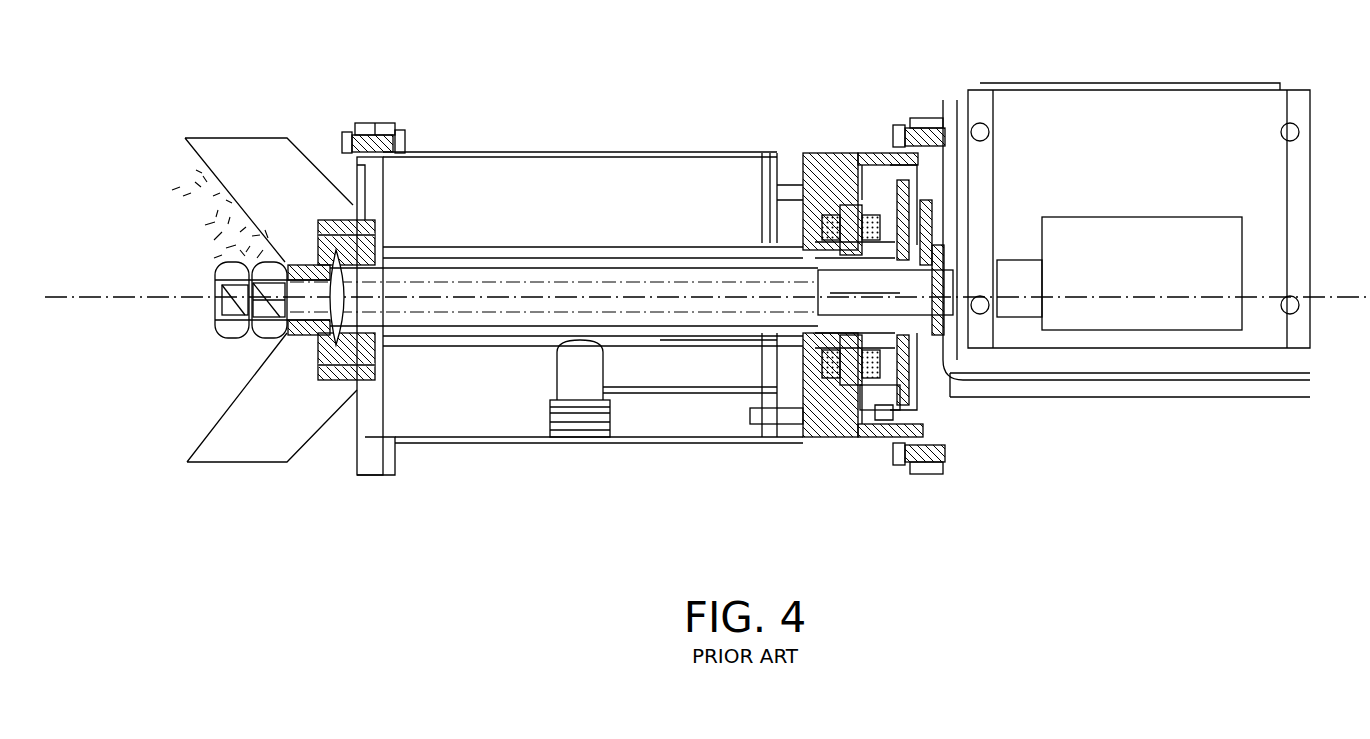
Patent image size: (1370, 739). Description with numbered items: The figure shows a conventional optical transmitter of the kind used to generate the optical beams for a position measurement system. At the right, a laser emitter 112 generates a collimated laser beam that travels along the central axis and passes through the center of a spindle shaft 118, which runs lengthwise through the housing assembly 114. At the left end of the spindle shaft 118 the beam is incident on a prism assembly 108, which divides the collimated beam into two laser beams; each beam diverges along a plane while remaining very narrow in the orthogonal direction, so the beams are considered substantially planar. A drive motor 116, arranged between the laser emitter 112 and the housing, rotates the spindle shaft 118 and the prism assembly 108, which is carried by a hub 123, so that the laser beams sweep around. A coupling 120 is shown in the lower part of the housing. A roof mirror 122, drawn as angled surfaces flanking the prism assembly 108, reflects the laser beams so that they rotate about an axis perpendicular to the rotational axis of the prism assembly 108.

The prism assembly 108 is at (217, 333).
The laser emitter 112 is at (1135, 332).
The housing 114 is at (370, 72).
The drive motor 116 is at (832, 360).
The spindle shaft 118 is at (510, 257).
The coupling 120 is at (580, 353).
The roof mirror 122 is at (245, 136).
The hub 123 is at (332, 380).